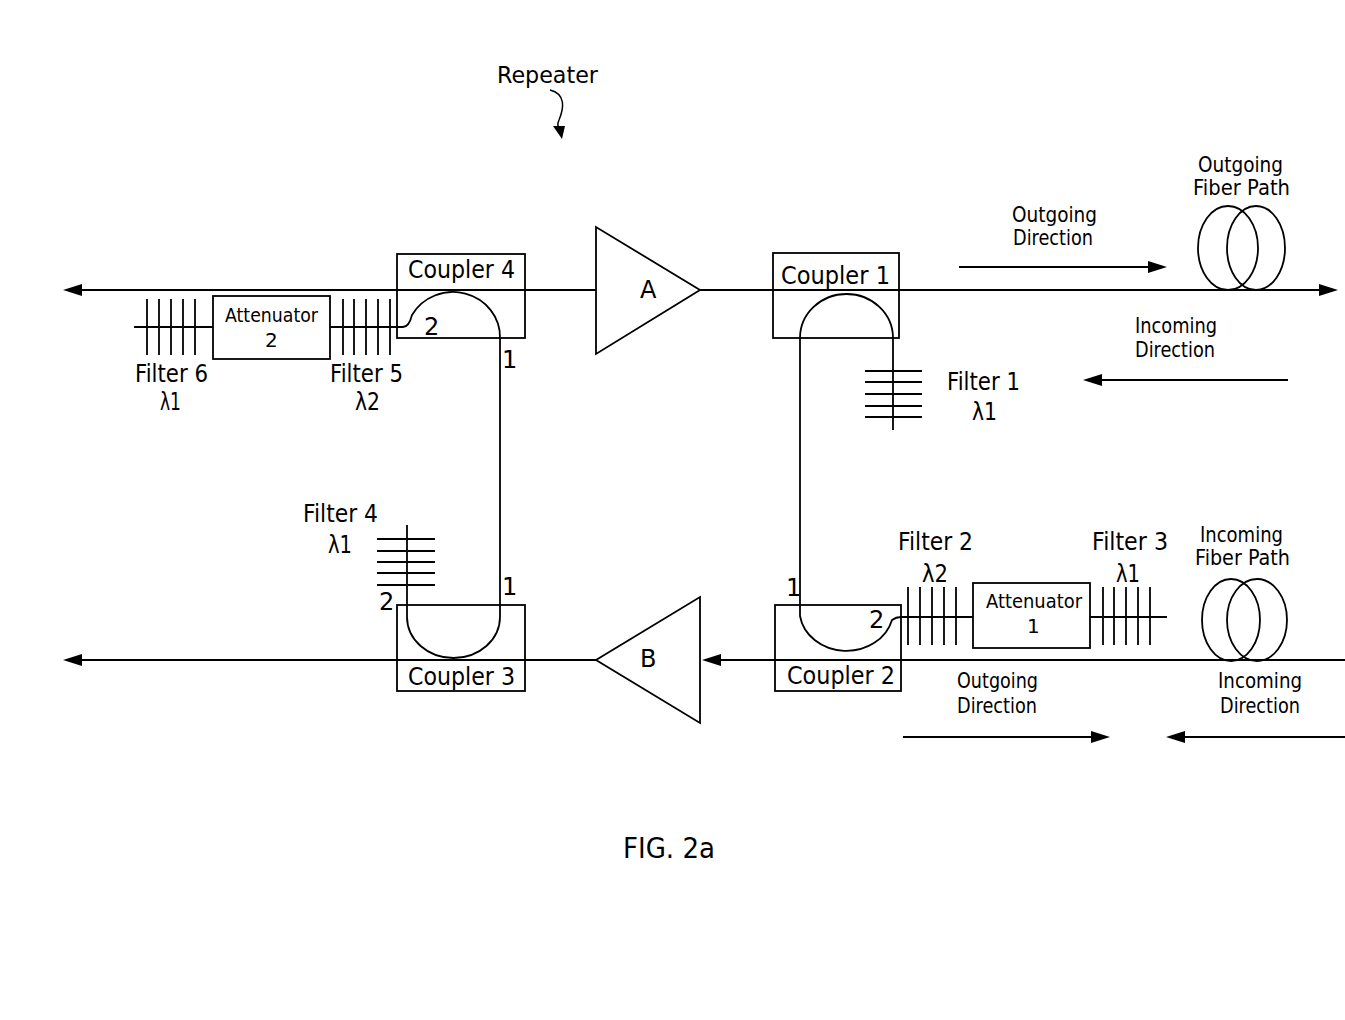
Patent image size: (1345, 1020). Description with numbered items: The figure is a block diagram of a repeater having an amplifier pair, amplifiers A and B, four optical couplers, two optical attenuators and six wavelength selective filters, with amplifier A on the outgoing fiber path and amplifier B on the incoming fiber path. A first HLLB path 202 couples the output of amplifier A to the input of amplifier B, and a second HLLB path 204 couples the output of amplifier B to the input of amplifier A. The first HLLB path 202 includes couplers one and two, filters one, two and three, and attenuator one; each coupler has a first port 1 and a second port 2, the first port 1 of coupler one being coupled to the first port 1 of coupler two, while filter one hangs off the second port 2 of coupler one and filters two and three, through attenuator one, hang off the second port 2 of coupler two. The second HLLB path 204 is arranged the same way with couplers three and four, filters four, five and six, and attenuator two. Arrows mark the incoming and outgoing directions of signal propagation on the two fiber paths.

The first HLLB path 202 is at (762, 400).
The second HLLB path 204 is at (542, 548).
The first port 1 is at (839, 333).
The second port 2 is at (906, 384).